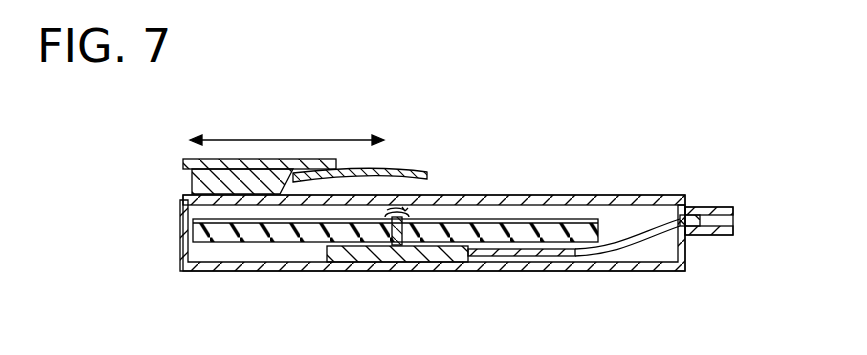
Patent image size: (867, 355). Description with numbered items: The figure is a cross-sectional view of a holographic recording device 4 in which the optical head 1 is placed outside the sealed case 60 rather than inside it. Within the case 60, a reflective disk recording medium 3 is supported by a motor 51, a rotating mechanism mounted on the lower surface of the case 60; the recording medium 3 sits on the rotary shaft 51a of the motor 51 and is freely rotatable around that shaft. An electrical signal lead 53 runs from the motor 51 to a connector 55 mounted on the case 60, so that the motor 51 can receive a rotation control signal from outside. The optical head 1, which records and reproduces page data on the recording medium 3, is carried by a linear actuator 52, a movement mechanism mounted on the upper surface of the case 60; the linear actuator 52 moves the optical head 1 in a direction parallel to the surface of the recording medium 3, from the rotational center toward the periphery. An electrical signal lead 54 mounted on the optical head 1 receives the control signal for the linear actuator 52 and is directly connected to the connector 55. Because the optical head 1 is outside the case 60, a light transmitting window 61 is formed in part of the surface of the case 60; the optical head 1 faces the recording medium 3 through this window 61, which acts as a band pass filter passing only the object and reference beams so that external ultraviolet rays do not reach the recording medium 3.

The optical head 1 is at (191, 186).
The recording medium 3 is at (267, 241).
The holographic recording device 4 is at (457, 188).
The motor 51 is at (431, 254).
The rotary shaft 51a is at (383, 228).
The linear actuator 52 is at (183, 159).
The electrical signal lead 53 is at (556, 254).
The electrical signal lead 54 is at (390, 170).
The connector 55 is at (710, 207).
The case 60 is at (523, 195).
The light transmitting window 61 is at (185, 200).